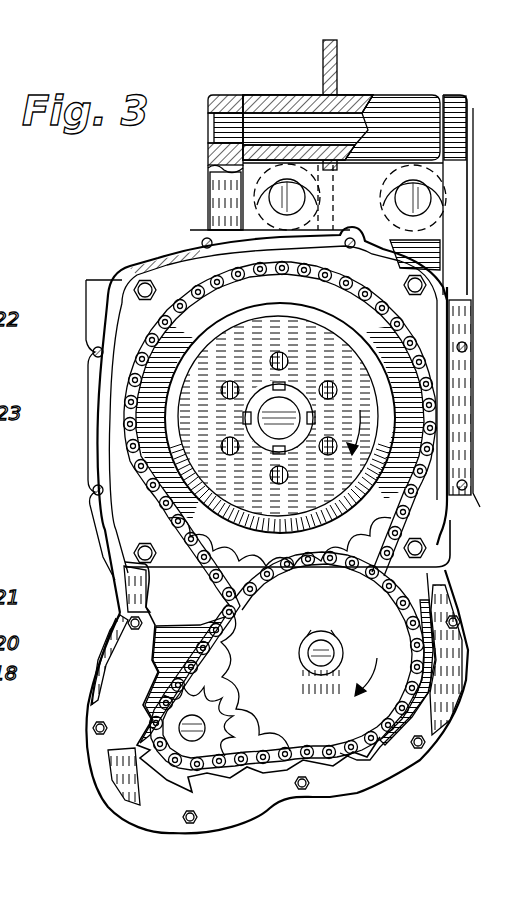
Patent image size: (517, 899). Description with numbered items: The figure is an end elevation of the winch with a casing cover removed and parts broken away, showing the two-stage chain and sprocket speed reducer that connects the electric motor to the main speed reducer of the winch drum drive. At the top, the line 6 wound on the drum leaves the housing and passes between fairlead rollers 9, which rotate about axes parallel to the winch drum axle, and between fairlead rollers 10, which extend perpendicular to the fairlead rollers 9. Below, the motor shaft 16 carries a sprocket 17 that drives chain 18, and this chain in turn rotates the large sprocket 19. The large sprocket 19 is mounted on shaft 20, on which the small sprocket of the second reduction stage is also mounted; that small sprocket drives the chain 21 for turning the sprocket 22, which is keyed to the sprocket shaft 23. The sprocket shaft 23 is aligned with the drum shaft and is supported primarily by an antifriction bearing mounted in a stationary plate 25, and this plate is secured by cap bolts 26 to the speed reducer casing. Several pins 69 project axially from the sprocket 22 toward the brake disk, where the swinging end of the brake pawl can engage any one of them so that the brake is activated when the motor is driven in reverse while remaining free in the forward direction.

The line 6 is at (338, 71).
The fairlead rollers 10 is at (278, 98).
The fairlead rollers 9 is at (207, 174).
The stationary plate 25 is at (207, 174).
The cap bolts 26 is at (142, 288).
The sprocket 22 is at (246, 547).
The sprocket shaft 23 is at (262, 418).
The pins 69 is at (328, 381).
The chain 21 is at (208, 588).
The large sprocket 19 is at (342, 609).
The shaft 20 is at (334, 646).
The sprocket 17 is at (232, 722).
The motor shaft 16 is at (178, 728).
The chain 18 is at (380, 737).